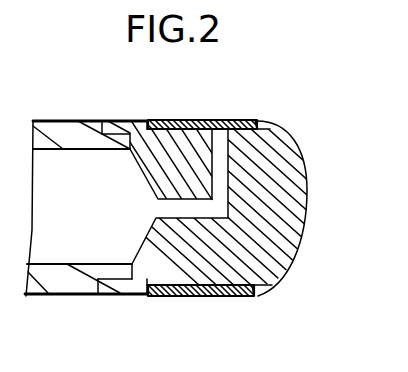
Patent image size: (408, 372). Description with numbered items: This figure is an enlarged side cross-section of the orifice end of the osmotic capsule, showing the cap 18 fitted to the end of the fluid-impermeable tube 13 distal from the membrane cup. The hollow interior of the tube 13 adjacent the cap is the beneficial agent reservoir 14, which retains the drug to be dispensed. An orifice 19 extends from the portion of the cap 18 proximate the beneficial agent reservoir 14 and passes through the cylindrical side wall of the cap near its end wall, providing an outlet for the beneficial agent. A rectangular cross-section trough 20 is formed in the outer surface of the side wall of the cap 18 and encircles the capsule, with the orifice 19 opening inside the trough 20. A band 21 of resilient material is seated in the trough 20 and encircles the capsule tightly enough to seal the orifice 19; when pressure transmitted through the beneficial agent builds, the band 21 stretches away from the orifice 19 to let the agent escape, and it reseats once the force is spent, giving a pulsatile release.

The tube 13 is at (90, 108).
The beneficial agent reservoir 14 is at (57, 240).
The cap 18 is at (233, 186).
The orifice 19 is at (178, 212).
The trough 20 is at (288, 202).
The band 21 is at (150, 311).